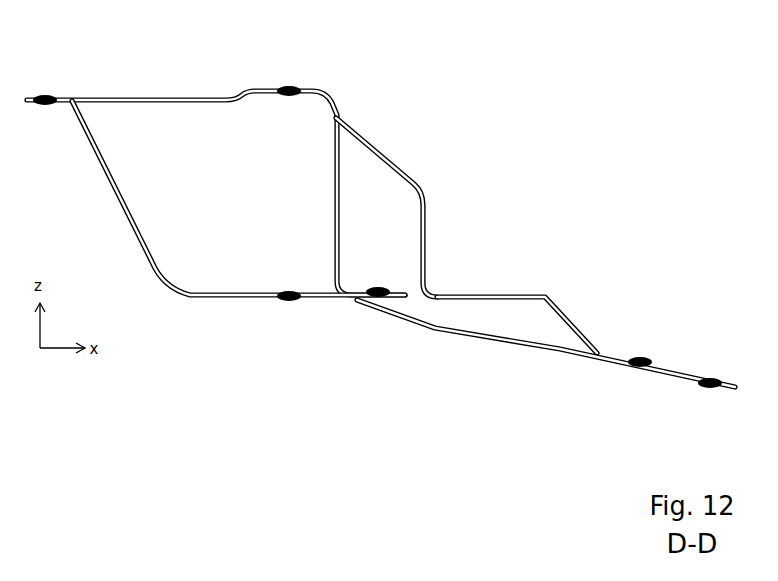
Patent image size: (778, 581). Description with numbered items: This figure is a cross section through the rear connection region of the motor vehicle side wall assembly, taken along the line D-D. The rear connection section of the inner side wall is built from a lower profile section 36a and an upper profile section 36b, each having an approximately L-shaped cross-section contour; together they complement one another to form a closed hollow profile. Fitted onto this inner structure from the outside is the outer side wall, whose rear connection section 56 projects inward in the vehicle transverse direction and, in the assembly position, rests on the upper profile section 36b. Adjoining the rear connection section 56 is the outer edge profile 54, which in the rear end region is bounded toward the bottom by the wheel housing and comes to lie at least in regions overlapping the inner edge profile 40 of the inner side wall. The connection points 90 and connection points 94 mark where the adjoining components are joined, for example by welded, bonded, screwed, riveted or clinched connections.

The lower profile section 36a is at (210, 296).
The upper profile section 36b is at (175, 100).
The inner edge profile 40 is at (482, 339).
The outer edge profile 54 is at (510, 297).
The rear connection section 56 is at (364, 150).
The connection points 90 is at (45, 96).
The connection points 94 is at (289, 88).